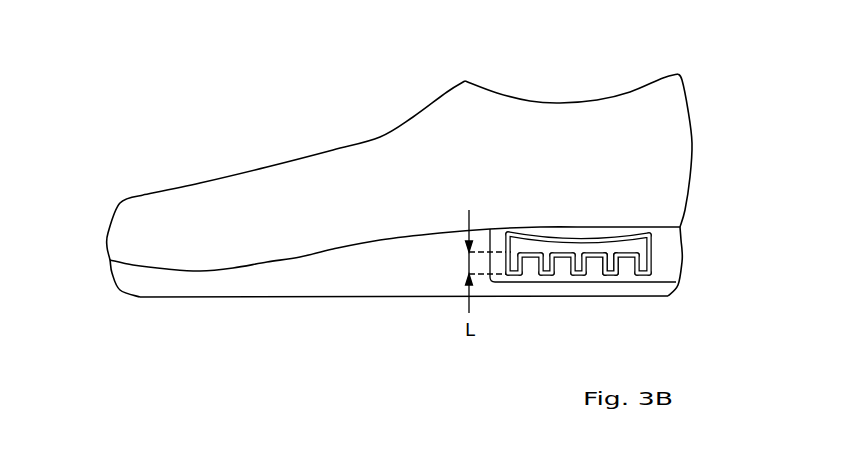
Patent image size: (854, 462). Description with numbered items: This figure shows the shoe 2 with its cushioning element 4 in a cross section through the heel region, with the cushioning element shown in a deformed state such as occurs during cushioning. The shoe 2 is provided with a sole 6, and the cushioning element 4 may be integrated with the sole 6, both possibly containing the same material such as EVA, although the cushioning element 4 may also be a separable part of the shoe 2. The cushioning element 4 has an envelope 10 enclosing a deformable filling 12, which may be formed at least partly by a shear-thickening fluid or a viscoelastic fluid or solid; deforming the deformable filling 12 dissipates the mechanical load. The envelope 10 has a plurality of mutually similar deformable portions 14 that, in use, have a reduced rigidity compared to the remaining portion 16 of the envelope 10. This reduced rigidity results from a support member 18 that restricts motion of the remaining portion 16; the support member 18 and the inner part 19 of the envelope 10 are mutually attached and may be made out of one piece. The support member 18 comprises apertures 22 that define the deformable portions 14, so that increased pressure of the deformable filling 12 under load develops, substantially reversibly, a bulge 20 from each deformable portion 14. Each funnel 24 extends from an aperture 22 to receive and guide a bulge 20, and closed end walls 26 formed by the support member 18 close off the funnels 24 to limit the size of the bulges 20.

The shoe 2 is at (243, 135).
The cushioning element 4 is at (673, 267).
The sole 6 is at (424, 280).
The envelope 10 is at (632, 239).
The deformable filling 12 is at (545, 243).
The deformable portion 14 is at (598, 297).
The remaining portion 16 is at (595, 253).
The support member 18 is at (630, 260).
The inner part 19 is at (652, 268).
The bulge 20 is at (546, 280).
The aperture 22 is at (613, 255).
The funnel 24 is at (613, 282).
The closed end wall 26 is at (580, 282).